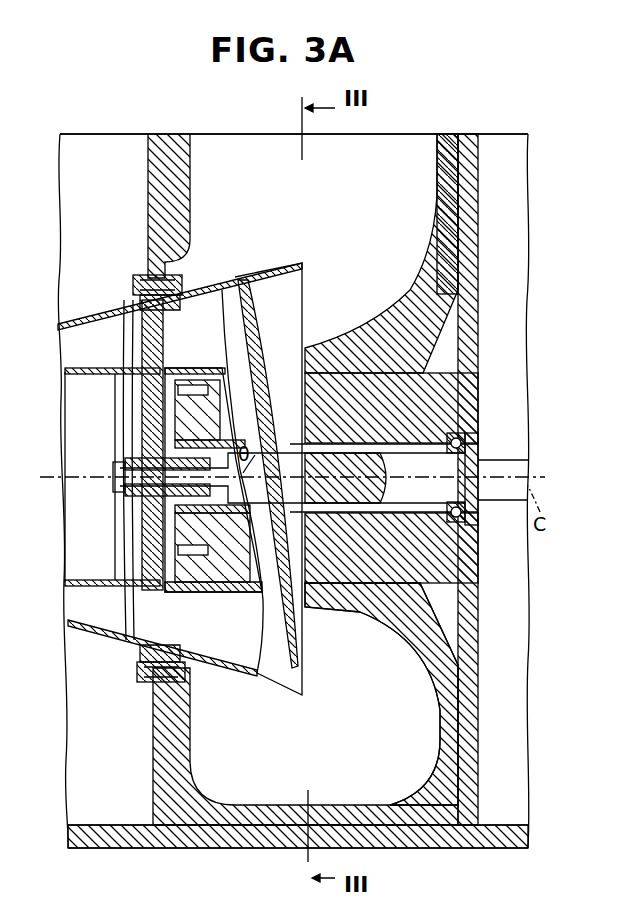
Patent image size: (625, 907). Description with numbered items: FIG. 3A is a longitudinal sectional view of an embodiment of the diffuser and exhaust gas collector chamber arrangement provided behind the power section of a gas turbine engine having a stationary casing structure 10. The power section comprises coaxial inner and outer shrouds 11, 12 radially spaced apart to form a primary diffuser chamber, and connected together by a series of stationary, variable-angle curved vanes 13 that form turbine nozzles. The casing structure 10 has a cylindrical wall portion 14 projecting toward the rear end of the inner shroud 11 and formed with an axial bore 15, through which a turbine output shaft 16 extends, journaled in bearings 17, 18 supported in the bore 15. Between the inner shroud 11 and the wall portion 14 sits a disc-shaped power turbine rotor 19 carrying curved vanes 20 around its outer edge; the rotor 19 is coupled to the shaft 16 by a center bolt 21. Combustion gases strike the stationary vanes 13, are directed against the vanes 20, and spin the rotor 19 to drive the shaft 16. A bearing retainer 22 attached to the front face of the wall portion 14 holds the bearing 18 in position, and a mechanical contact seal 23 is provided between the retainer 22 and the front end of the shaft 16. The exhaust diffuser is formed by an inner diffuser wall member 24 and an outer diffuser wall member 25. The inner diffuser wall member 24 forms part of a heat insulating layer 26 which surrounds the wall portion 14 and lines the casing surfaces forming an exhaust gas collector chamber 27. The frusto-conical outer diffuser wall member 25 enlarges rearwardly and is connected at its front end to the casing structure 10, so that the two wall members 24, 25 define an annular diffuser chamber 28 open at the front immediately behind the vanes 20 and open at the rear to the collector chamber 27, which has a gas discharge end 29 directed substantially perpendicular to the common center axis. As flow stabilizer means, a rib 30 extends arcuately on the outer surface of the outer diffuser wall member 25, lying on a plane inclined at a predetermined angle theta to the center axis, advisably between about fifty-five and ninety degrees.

The casing structure 10 is at (437, 850).
The inner shroud 11 is at (80, 371).
The outer shroud 12 is at (120, 318).
The curved vanes 13 is at (97, 338).
The cylindrical wall portion 14 is at (377, 583).
The axial bore 15 is at (386, 514).
The turbine output shaft 16 is at (503, 501).
The bearing 17 is at (466, 441).
The bearing 18 is at (213, 480).
The power turbine rotor 19 is at (140, 541).
The curved vanes 20 is at (140, 640).
The center bolt 21 is at (118, 480).
The bearing retainer 22 is at (212, 547).
The mechanical contact seal 23 is at (197, 410).
The inner diffuser wall member 24 is at (368, 331).
The outer diffuser wall member 25 is at (225, 290).
The heat insulating layer 26 is at (452, 220).
The exhaust gas collector chamber 27 is at (390, 224).
The diffuser chamber 28 is at (206, 342).
The gas discharge end 29 is at (420, 134).
The rib 30 is at (247, 296).